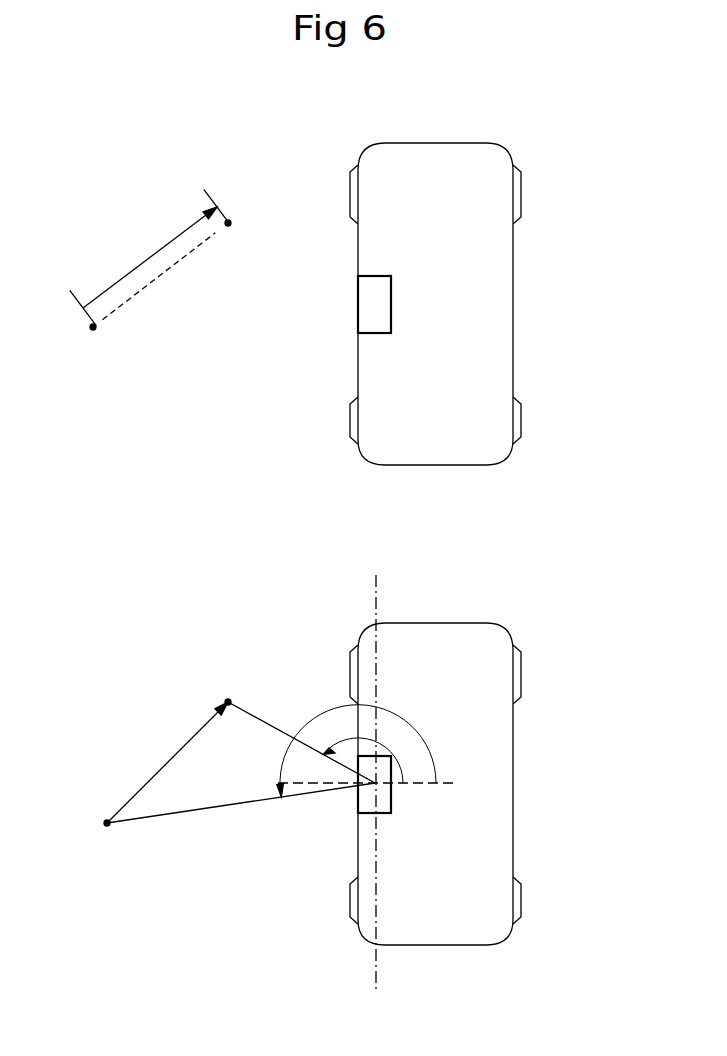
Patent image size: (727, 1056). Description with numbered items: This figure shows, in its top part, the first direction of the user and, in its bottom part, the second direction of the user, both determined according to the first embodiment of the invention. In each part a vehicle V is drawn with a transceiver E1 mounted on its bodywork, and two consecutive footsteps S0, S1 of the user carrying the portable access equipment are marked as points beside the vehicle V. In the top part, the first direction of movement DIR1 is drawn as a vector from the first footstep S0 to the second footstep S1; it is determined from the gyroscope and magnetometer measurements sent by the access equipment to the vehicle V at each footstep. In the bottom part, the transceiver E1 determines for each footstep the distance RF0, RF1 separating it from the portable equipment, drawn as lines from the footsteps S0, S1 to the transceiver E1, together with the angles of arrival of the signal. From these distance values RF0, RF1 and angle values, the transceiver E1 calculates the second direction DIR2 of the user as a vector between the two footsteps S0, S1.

The vehicle V is at (473, 190).
The transceiver E1 is at (372, 276).
The first footstep S0 is at (86, 569).
The second footstep S1 is at (234, 447).
The first direction of movement DIR1 is at (150, 262).
The second direction of movement DIR2 is at (167, 762).
The first distance RF0 is at (241, 812).
The second distance RF1 is at (301, 733).